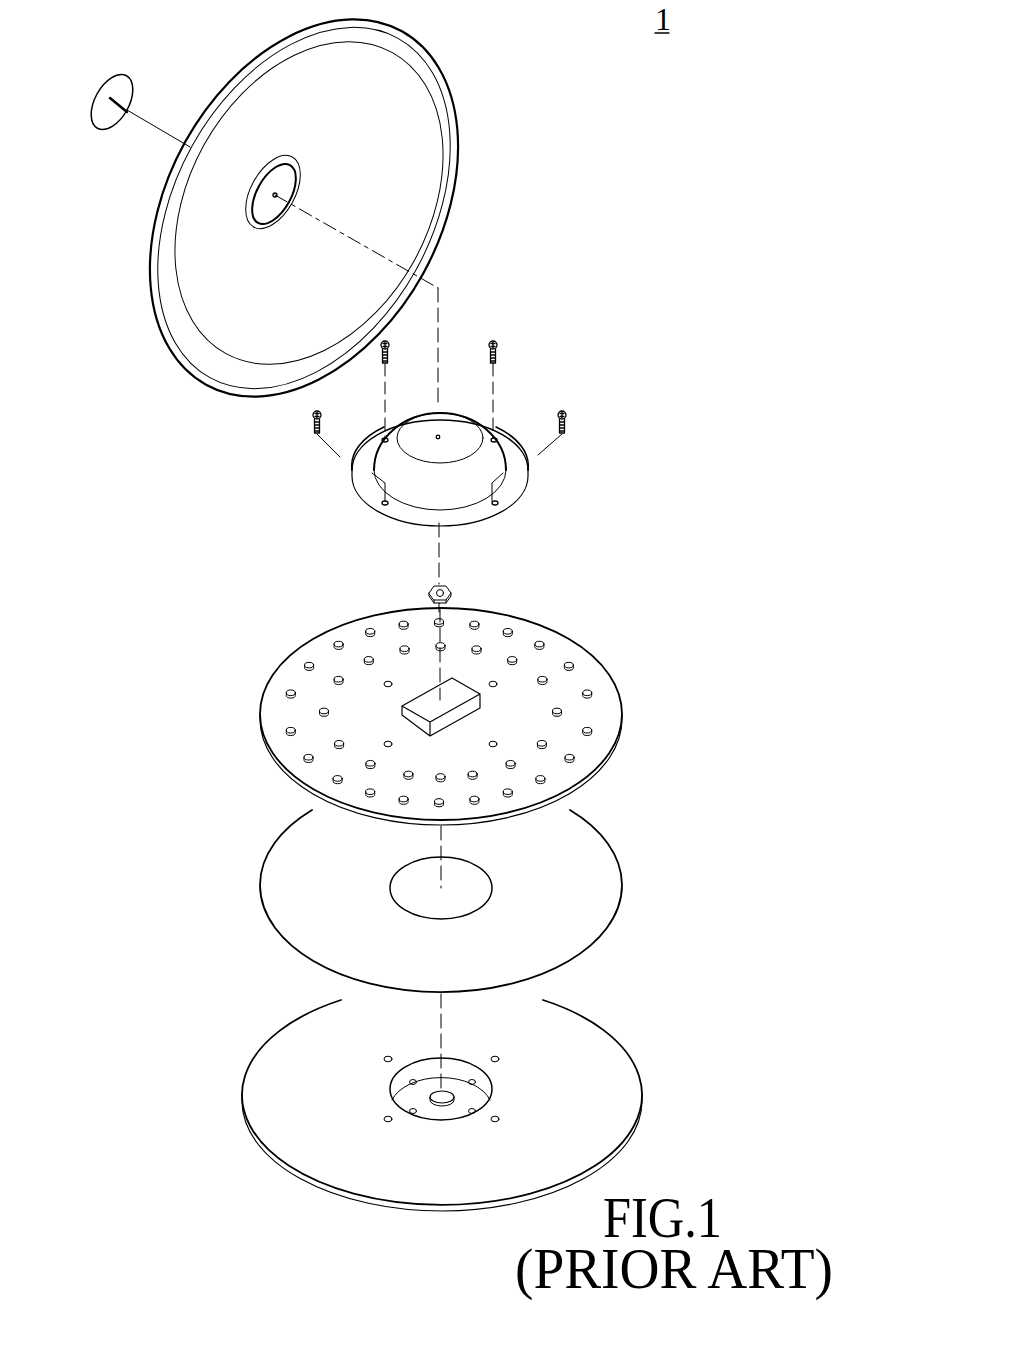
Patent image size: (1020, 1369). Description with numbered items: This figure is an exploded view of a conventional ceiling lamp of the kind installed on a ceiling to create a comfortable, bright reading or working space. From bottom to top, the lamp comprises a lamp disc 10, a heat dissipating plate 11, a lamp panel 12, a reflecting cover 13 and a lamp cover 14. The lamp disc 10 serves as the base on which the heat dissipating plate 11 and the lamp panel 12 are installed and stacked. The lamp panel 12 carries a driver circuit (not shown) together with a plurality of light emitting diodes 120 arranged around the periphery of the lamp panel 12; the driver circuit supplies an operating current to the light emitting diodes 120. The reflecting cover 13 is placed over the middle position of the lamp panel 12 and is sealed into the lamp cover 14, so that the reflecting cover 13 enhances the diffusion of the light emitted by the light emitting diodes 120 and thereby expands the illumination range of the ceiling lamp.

The lamp disc 10 is at (598, 1037).
The heat dissipating plate 11 is at (603, 872).
The lamp panel 12 is at (483, 716).
The light emitting diodes (LEDs) 120 is at (592, 688).
The reflecting cover 13 is at (513, 493).
The lamp cover 14 is at (422, 190).